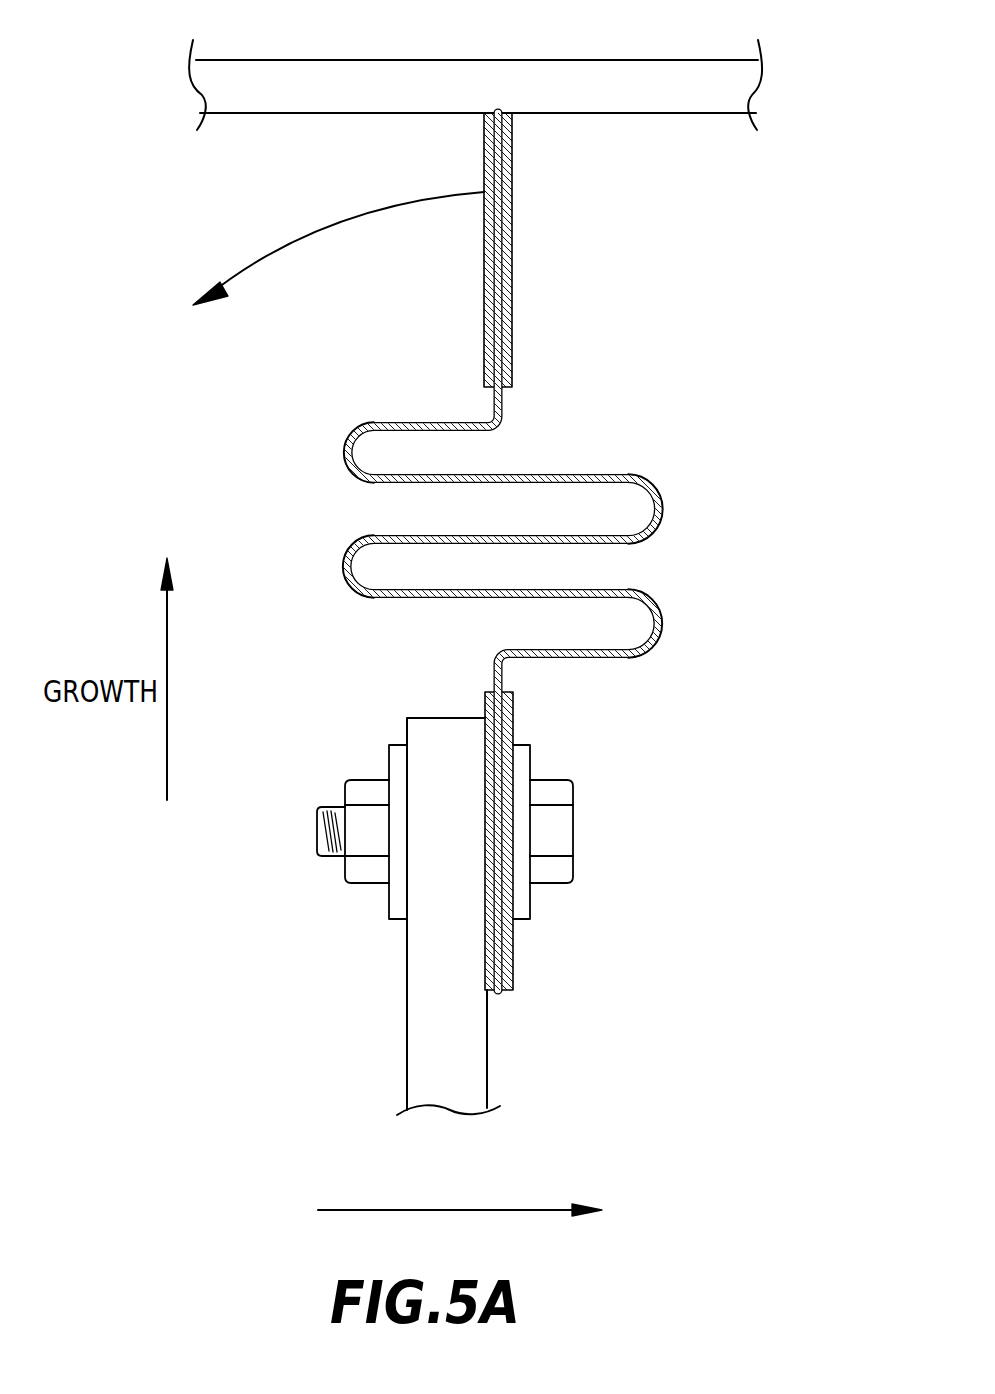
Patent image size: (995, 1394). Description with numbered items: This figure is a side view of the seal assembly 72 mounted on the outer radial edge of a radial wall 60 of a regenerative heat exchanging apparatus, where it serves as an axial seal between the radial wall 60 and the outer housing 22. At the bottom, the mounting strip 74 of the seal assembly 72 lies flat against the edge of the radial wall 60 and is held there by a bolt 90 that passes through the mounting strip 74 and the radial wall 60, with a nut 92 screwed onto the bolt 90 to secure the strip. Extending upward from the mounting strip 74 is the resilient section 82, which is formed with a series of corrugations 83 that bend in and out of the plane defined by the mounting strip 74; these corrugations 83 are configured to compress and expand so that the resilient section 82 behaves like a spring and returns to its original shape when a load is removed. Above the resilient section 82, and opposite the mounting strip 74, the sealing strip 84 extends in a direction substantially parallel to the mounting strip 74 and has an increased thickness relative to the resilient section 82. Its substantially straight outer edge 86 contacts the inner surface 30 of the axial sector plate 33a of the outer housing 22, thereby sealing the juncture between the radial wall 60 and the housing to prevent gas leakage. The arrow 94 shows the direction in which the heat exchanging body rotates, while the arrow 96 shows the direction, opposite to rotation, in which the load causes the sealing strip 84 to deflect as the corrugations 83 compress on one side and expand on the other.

The outer housing 22 is at (475, 81).
The axial sector plate 33a is at (350, 59).
The side inner surface 30 is at (640, 113).
The seal assembly 72 is at (722, 260).
The sealing strip 84 is at (508, 250).
The outer edge 86 is at (482, 115).
The resilient section 82 is at (626, 466).
The corrugations 83 is at (343, 462).
The mounting strip 74 is at (497, 735).
The radial wall 60 is at (487, 1055).
The bolt 90 is at (574, 826).
The nut 92 is at (347, 878).
The arrow indicating sealing strip deflection 96 is at (298, 238).
The arrow indicating direction of rotation 94 is at (520, 1210).